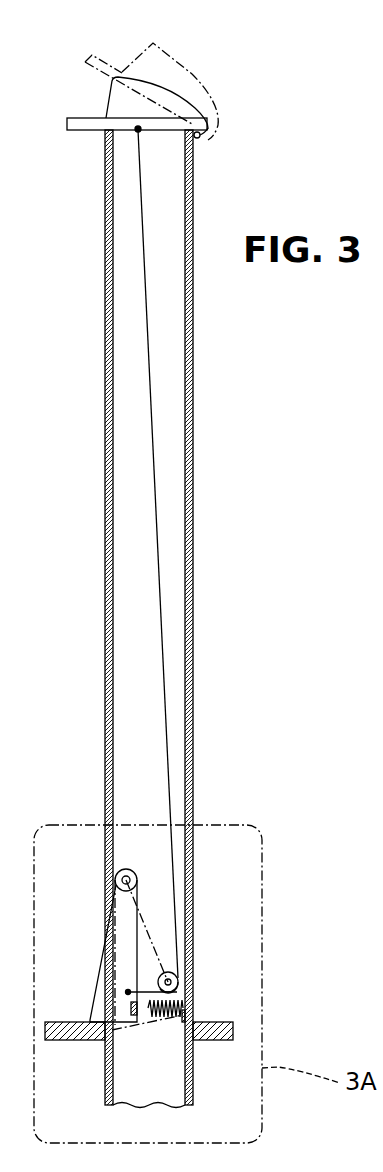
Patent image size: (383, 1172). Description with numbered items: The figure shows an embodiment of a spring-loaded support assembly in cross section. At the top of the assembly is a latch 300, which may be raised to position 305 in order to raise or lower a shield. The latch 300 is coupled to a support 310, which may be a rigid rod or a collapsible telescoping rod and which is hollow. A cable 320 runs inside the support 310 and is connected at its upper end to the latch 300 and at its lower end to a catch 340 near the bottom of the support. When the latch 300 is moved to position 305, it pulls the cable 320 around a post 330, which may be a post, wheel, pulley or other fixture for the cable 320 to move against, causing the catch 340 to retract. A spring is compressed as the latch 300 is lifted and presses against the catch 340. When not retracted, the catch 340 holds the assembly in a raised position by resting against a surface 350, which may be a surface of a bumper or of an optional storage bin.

The latch 300 is at (89, 117).
The raised position of latch 305 is at (193, 77).
The support 310 is at (193, 510).
The cable 320 is at (152, 368).
The post 330 is at (176, 970).
The catch 340 is at (100, 950).
The surface 350 is at (73, 1040).